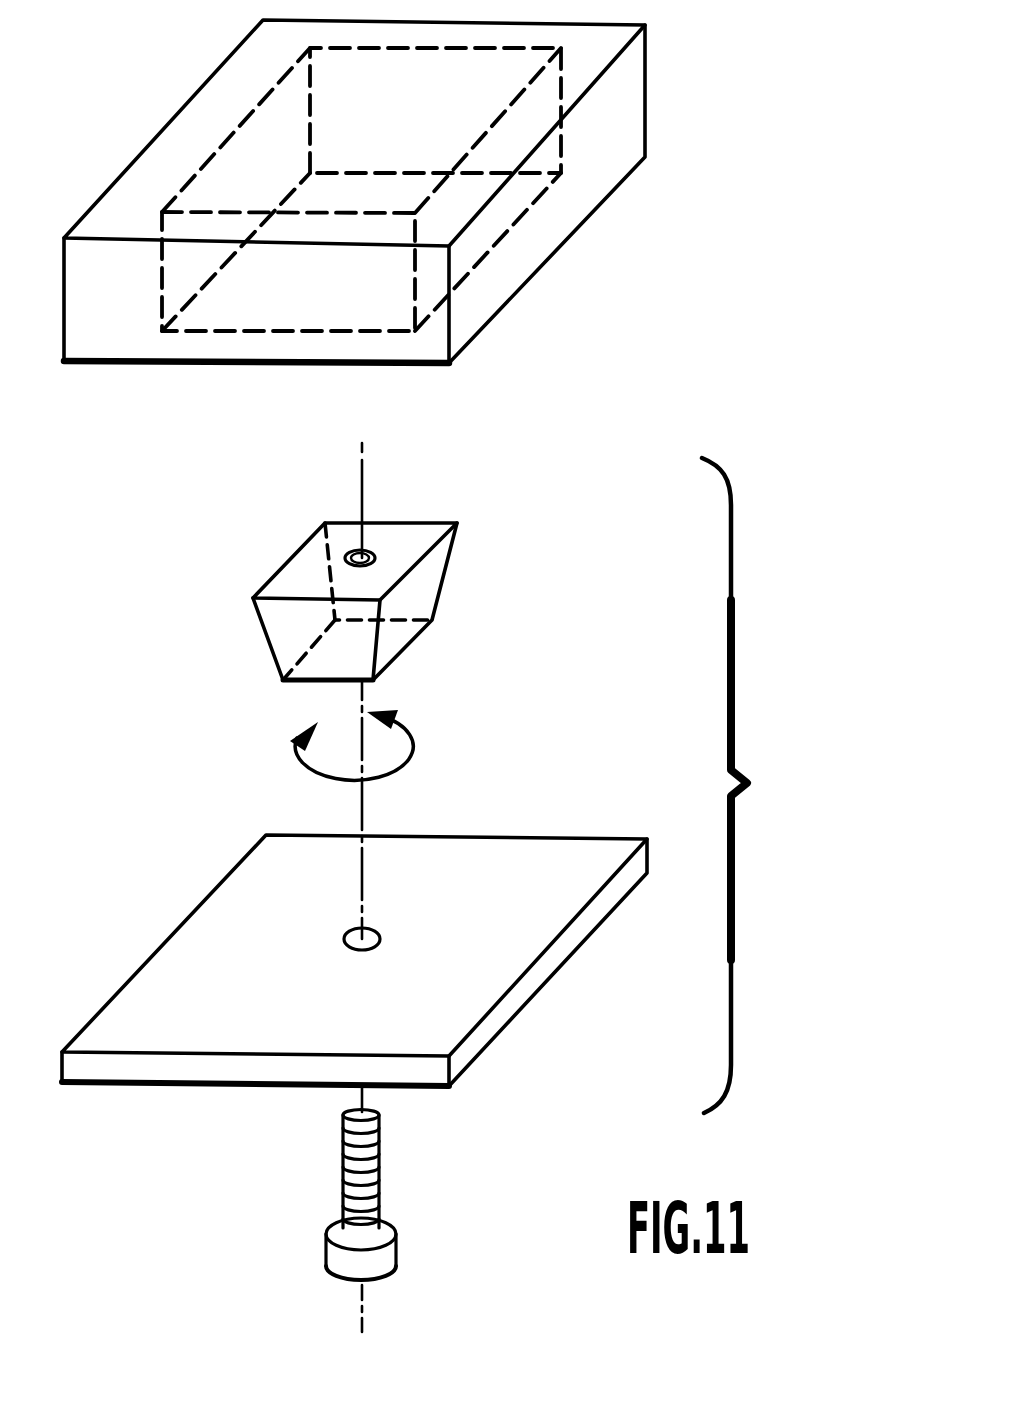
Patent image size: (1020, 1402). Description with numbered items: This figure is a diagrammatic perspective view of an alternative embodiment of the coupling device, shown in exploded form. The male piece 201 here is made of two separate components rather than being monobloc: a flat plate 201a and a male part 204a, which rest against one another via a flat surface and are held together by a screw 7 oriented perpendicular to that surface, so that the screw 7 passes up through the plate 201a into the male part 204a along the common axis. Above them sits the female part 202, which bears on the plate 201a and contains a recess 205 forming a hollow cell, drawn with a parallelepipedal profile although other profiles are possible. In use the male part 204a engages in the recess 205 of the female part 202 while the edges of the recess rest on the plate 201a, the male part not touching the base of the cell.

The female part 202 is at (395, 378).
The recess 205 is at (198, 344).
The male piece 201 is at (756, 785).
The male part 204a is at (417, 587).
The plate 201a is at (497, 1022).
The screw 7 is at (382, 1188).